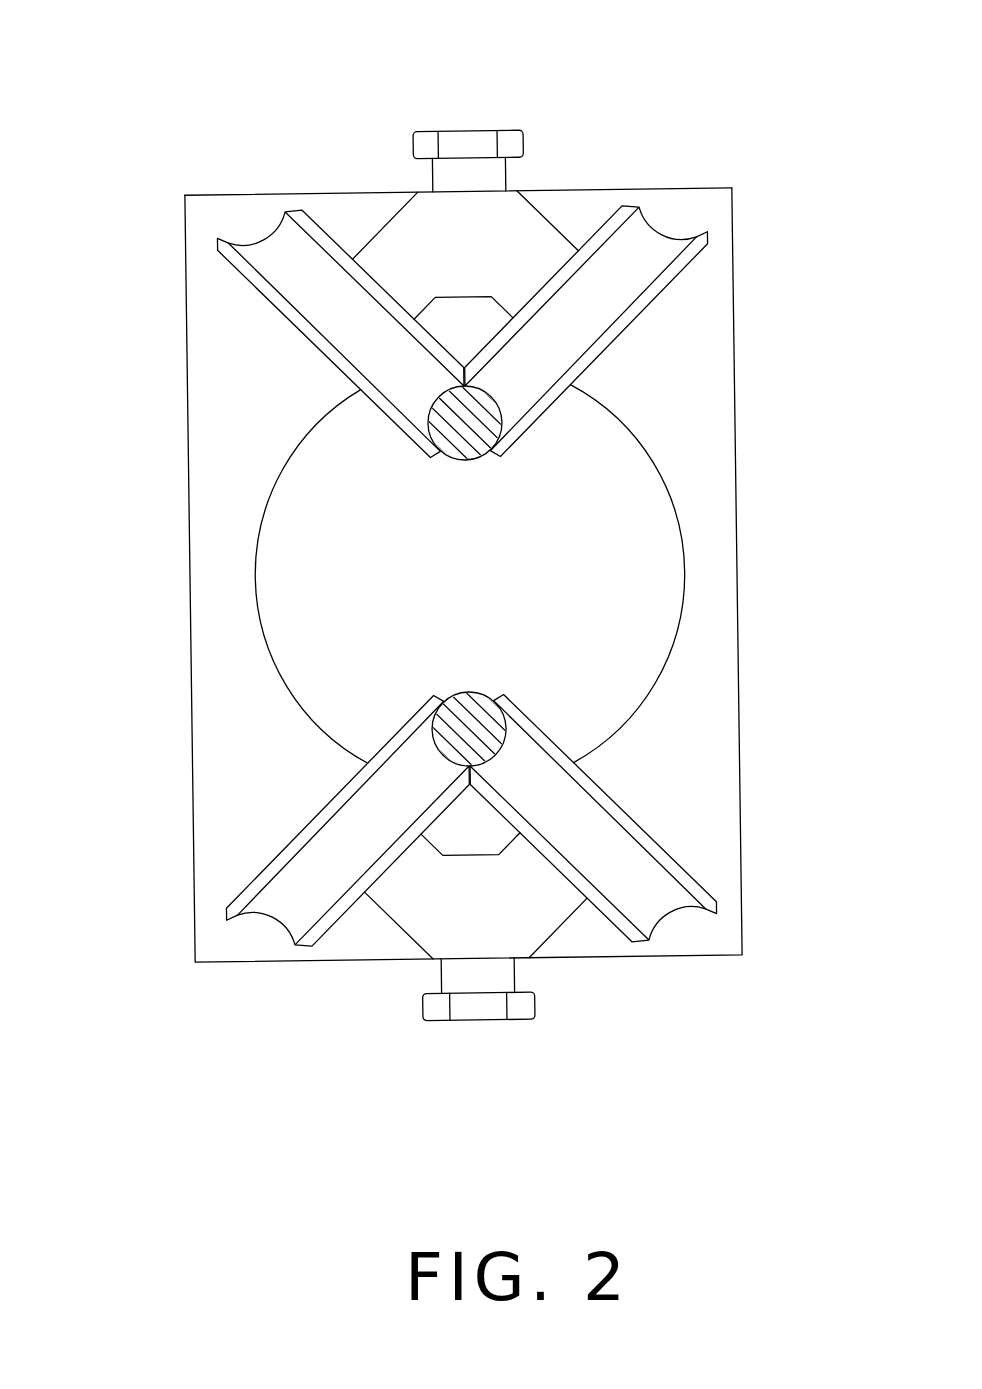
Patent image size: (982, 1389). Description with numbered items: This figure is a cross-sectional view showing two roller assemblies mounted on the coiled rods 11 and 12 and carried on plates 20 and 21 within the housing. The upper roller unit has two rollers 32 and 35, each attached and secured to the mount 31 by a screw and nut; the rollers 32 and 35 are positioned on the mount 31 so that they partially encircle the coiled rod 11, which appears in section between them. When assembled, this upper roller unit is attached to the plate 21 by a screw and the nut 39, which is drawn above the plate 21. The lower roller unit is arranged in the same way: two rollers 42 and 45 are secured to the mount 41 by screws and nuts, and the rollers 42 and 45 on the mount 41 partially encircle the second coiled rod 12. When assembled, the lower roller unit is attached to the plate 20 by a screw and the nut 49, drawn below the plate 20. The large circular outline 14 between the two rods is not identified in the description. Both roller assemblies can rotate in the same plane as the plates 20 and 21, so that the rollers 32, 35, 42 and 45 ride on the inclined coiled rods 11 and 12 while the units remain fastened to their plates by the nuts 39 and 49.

The coiled rod 11 is at (470, 432).
The coiled rod 12 is at (472, 712).
The circular ring member 14 is at (637, 437).
The plate 20 is at (643, 957).
The plate 21 is at (295, 193).
The mount 31 is at (518, 227).
The roller 32 is at (628, 327).
The roller 35 is at (260, 300).
The nut 39 is at (463, 131).
The mount 41 is at (418, 907).
The roller 42 is at (603, 790).
The roller 45 is at (322, 807).
The nut 49 is at (490, 1014).